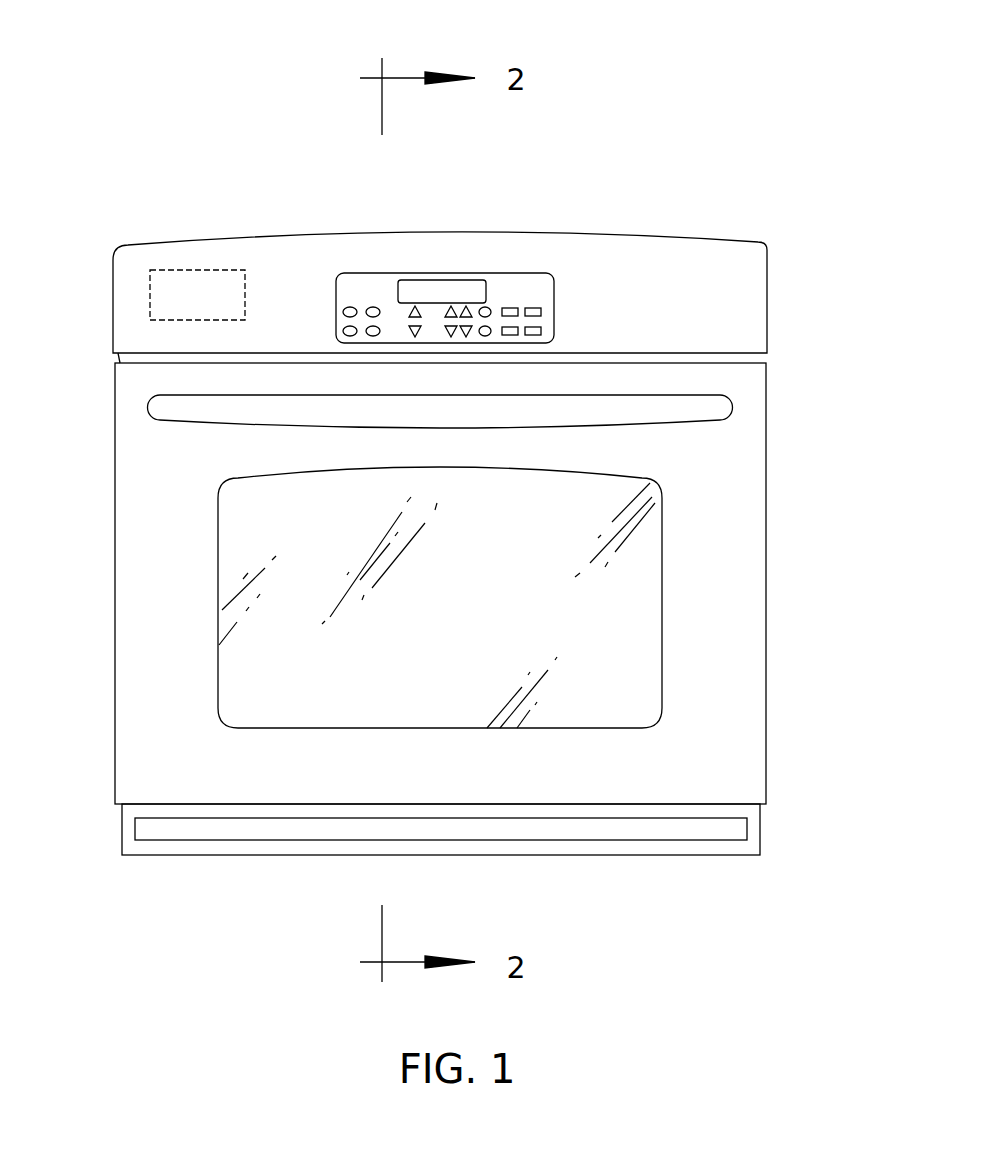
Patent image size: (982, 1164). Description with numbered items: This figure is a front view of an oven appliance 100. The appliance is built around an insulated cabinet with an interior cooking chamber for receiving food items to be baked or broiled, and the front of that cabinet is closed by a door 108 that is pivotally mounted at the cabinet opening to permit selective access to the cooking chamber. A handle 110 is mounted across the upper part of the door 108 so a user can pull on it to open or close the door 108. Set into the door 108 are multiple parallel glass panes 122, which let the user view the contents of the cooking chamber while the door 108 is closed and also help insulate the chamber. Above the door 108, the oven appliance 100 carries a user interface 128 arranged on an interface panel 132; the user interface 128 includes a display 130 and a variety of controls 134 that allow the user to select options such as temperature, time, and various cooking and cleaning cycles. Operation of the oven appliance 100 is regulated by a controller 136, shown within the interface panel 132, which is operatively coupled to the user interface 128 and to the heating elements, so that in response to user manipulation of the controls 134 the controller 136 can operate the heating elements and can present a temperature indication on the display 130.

The oven appliance 100 is at (459, 434).
The door 108 is at (722, 522).
The handle 110 is at (708, 407).
The glass panes 122 is at (643, 617).
The user interface 128 is at (520, 290).
The display 130 is at (440, 293).
The interface panel 132 is at (685, 267).
The controls 134 is at (350, 312).
The controller 136 is at (198, 268).